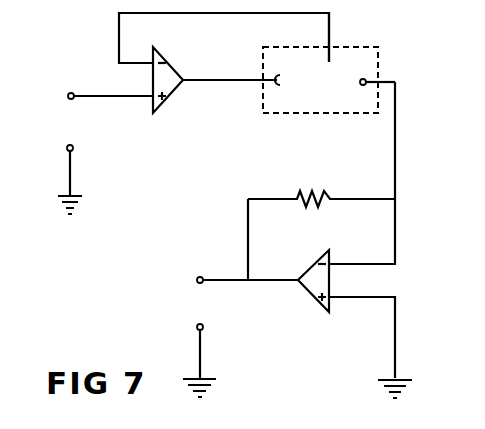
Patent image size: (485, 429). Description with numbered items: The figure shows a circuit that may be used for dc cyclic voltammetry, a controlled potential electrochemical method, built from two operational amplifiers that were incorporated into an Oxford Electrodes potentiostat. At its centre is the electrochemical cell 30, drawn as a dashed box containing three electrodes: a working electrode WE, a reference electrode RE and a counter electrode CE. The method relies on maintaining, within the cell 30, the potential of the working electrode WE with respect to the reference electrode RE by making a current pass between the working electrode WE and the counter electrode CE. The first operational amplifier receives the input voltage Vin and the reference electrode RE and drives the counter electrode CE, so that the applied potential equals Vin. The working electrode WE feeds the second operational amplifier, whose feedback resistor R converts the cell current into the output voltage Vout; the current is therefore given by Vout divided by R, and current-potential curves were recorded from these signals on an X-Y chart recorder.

The cell 30 is at (349, 63).
The reference electrode RE is at (325, 48).
The counter electrode CE is at (291, 94).
The working electrode WE is at (367, 95).
The resistor R is at (321, 184).
The applied potential input Vin is at (105, 153).
The output voltage Vout is at (240, 337).